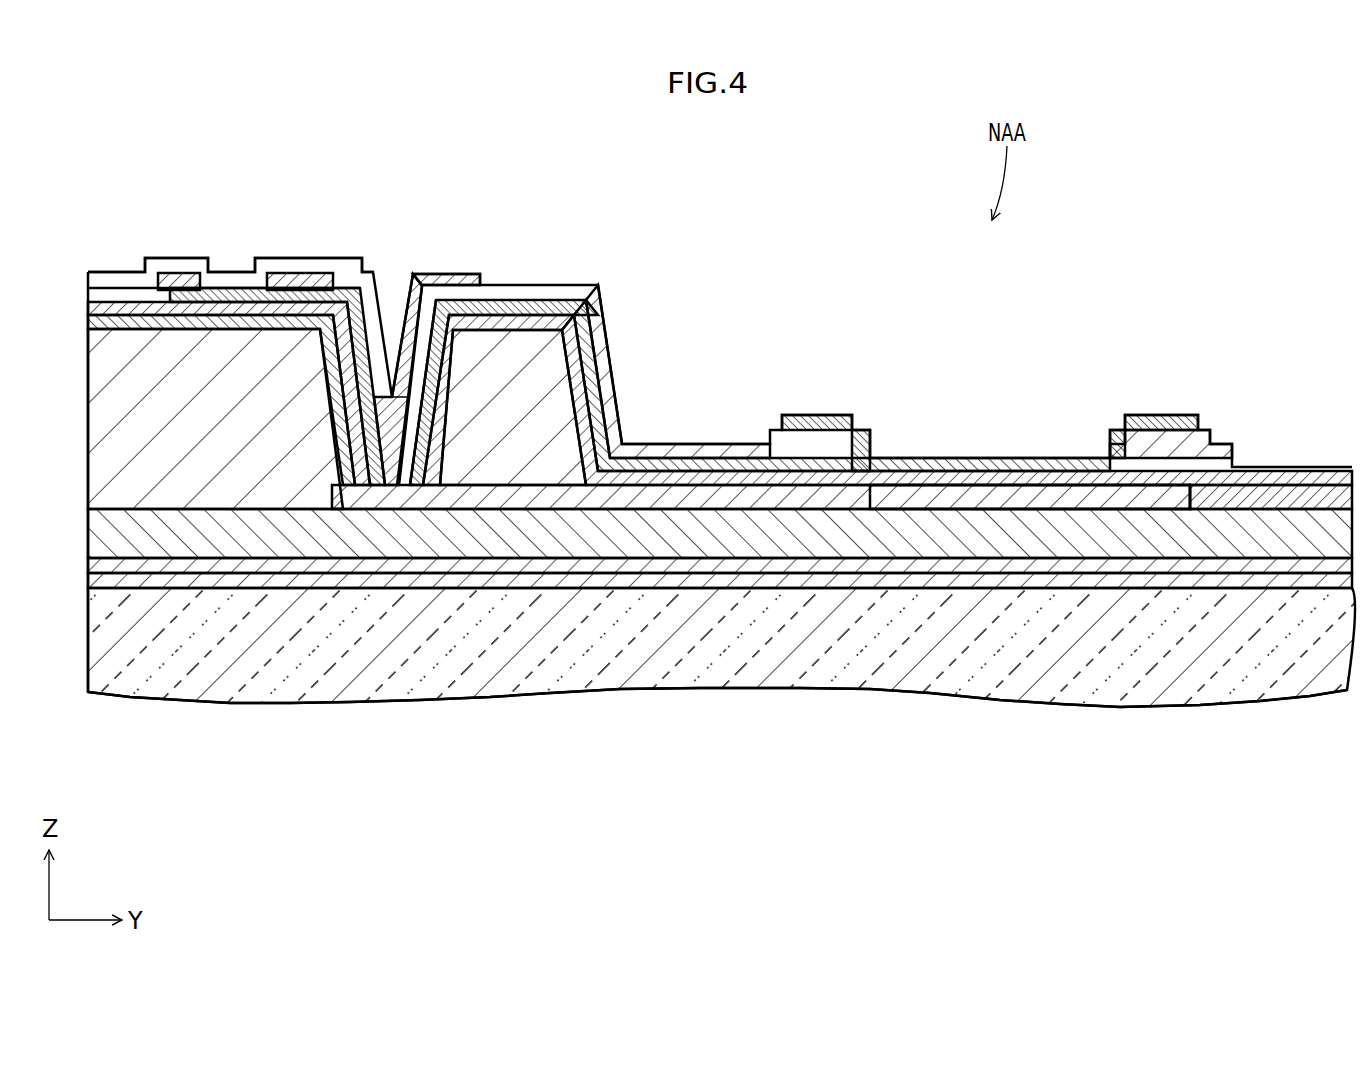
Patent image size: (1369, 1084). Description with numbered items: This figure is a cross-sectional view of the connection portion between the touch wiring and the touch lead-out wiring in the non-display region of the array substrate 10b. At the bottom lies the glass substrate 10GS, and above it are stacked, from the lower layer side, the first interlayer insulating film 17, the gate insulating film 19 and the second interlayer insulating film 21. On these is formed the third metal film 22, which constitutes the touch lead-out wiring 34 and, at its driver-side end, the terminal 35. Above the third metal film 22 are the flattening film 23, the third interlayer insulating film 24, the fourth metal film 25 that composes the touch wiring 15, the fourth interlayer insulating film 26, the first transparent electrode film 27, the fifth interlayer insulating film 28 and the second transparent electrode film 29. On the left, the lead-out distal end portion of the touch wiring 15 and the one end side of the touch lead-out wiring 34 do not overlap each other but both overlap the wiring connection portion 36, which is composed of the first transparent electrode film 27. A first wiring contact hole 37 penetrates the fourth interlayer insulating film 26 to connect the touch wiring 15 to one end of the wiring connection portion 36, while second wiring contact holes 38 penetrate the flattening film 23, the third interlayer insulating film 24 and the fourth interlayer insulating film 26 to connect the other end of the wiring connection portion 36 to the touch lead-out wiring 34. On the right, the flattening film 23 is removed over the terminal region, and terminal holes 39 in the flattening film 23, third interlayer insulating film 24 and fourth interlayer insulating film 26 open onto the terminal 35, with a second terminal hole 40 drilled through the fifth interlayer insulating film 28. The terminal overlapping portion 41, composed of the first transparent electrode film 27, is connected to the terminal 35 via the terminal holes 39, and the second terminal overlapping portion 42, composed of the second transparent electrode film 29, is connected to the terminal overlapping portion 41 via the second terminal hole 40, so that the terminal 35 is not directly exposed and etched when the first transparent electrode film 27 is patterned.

The glass substrate 10GS is at (1250, 700).
The array substrate 10b is at (1150, 706).
The touch wiring 15 is at (120, 275).
The fourth metal film 25 is at (230, 224).
The first interlayer insulating film 17 is at (415, 580).
The gate insulating film 19 is at (335, 565).
The second interlayer insulating film 21 is at (260, 540).
The flattening film 23 is at (180, 483).
The third interlayer insulating film 24 is at (342, 280).
The fourth interlayer insulating film 26 is at (137, 280).
The first transparent electrode film 27 is at (761, 323).
The fifth interlayer insulating film 28 is at (283, 276).
The second transparent electrode film 29 is at (842, 385).
The touch lead-out wiring 34 is at (595, 497).
The terminal 35 is at (1000, 510).
The third metal film 22 is at (761, 642).
The wiring connection portion 36 is at (310, 281).
The first wiring contact hole 37 is at (185, 286).
The second wiring contact holes 38 is at (448, 445).
The terminal holes 39 is at (573, 397).
The second terminal hole 40 is at (847, 415).
The terminal overlapping portion 41 is at (985, 468).
The second terminal overlapping portion 42 is at (915, 455).